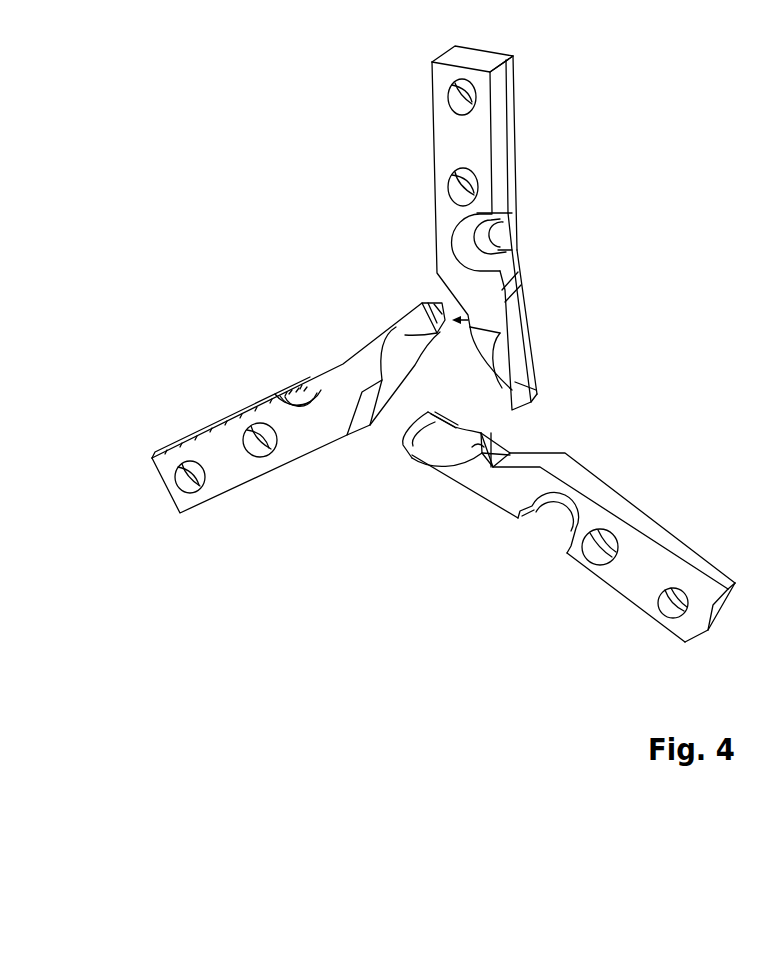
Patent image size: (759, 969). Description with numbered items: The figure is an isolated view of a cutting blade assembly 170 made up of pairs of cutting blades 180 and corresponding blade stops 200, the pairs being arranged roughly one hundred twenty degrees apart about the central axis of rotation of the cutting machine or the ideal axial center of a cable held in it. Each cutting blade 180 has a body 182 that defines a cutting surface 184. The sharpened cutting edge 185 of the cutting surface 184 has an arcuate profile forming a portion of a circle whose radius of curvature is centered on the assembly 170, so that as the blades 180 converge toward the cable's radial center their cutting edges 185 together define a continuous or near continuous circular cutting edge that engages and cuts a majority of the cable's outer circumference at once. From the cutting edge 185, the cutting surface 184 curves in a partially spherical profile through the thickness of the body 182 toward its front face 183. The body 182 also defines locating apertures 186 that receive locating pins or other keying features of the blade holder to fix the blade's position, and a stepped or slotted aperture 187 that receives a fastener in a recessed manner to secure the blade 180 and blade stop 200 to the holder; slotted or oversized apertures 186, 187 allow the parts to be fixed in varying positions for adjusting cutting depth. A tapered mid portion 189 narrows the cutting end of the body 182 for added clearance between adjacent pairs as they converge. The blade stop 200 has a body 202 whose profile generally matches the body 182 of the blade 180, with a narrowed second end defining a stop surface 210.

The cutting blade assembly 170 is at (593, 317).
The cutting blade 180 is at (474, 228).
The body 182 is at (443, 136).
The cutting surface 184 is at (405, 335).
The front face 183 is at (450, 480).
The cutting edge 185 is at (411, 458).
The locating apertures 186 is at (600, 563).
The slotted aperture 187 is at (548, 546).
The tapered mid portion 189 is at (536, 467).
The blade stop 200 is at (574, 153).
The body 202 is at (511, 92).
The stop surface 210 is at (498, 333).